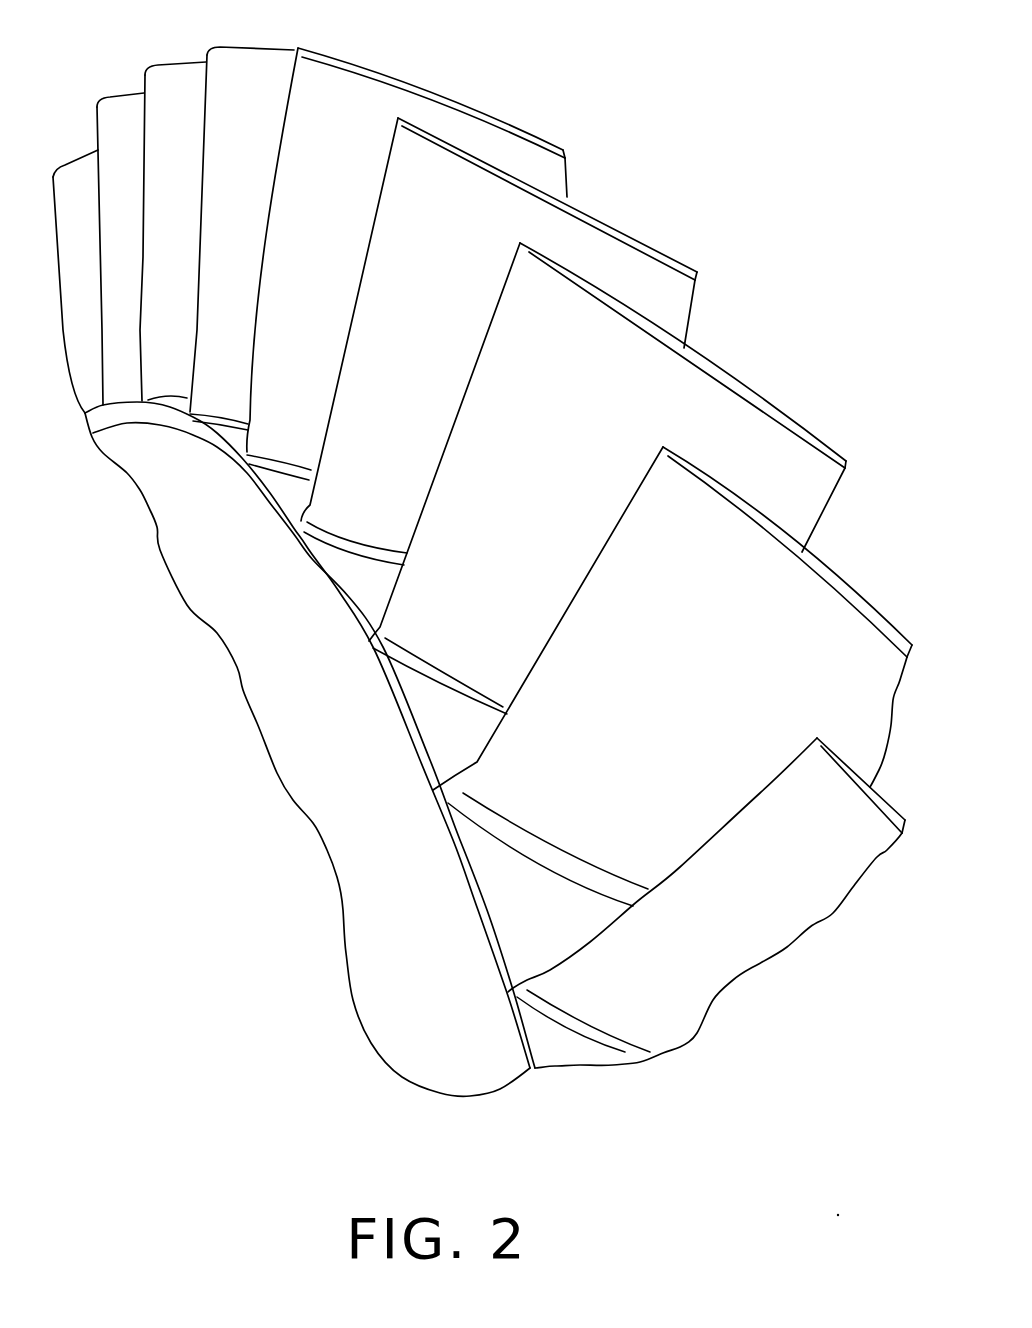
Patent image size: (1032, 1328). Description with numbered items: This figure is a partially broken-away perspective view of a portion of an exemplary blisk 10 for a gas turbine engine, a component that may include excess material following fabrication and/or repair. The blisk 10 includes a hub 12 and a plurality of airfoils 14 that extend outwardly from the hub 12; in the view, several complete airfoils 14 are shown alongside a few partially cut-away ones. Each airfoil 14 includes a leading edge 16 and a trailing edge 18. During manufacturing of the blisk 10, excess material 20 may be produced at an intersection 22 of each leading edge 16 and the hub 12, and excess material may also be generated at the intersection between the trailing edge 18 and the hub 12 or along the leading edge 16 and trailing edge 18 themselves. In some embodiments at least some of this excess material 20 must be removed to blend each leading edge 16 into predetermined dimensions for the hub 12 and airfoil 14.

The blisk 10 is at (713, 80).
The hub 12 is at (554, 1075).
The airfoils 14 is at (480, 187).
The leading edge 16 is at (477, 343).
The trailing edge 18 is at (697, 303).
The excess material 20 is at (297, 481).
The intersection 22 is at (286, 563).